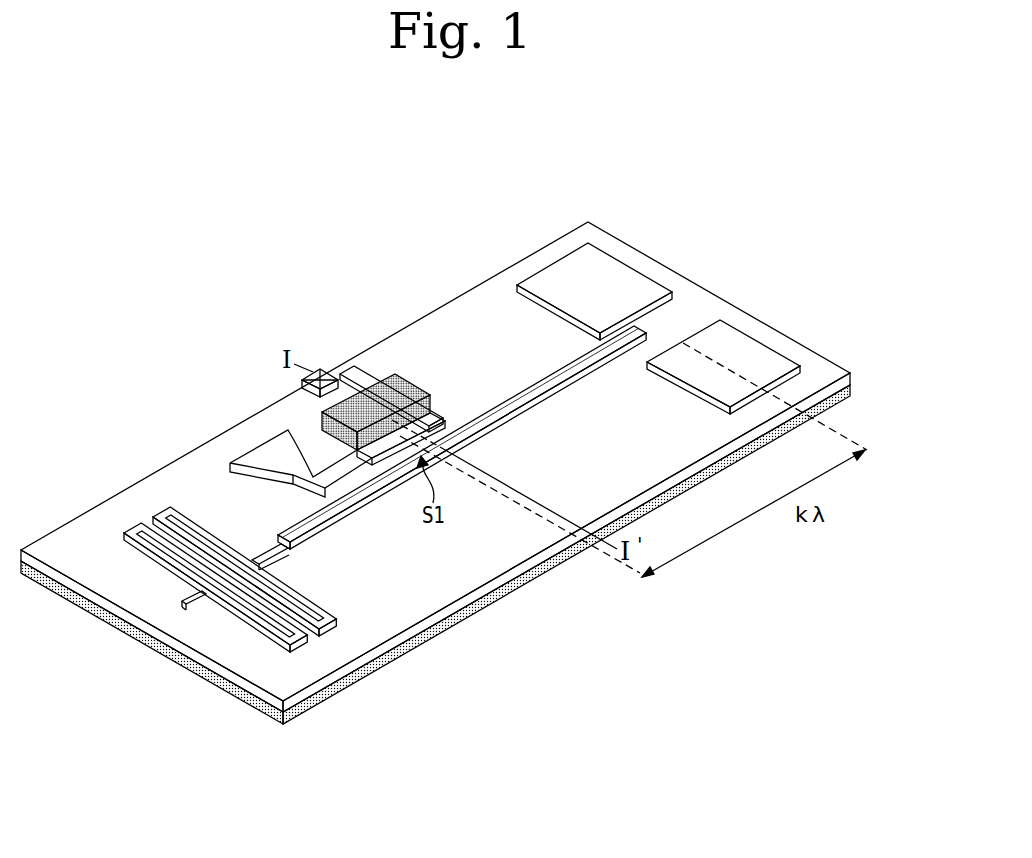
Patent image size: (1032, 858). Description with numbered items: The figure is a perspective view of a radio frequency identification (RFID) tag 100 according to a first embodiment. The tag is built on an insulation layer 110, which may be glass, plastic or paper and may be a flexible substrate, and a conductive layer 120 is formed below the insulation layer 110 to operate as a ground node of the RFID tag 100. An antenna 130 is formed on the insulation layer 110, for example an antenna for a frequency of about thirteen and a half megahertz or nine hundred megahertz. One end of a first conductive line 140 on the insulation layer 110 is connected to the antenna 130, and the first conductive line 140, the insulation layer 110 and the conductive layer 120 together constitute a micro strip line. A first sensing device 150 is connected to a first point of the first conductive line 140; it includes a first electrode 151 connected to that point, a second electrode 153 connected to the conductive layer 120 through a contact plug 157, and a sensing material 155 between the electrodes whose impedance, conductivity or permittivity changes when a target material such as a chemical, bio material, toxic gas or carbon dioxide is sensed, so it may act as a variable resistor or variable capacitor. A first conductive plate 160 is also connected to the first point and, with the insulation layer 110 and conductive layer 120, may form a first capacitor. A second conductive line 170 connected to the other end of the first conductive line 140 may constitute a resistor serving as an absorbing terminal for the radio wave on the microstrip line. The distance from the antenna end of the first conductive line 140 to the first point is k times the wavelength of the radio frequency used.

The radio frequency identification (RFID) tag 100 is at (913, 143).
The insulation layer 110 is at (851, 378).
The conductive layer 120 is at (851, 393).
The antenna 130 is at (641, 287).
The first conductive line 140 is at (320, 518).
The first sensing device 150 is at (356, 340).
The first electrode 151 is at (436, 413).
The second electrode 153 is at (362, 380).
The sensing material 155 is at (393, 382).
The contact plug 157 is at (309, 345).
The first conductive plate 160 is at (260, 453).
The second conductive line 170 is at (135, 523).